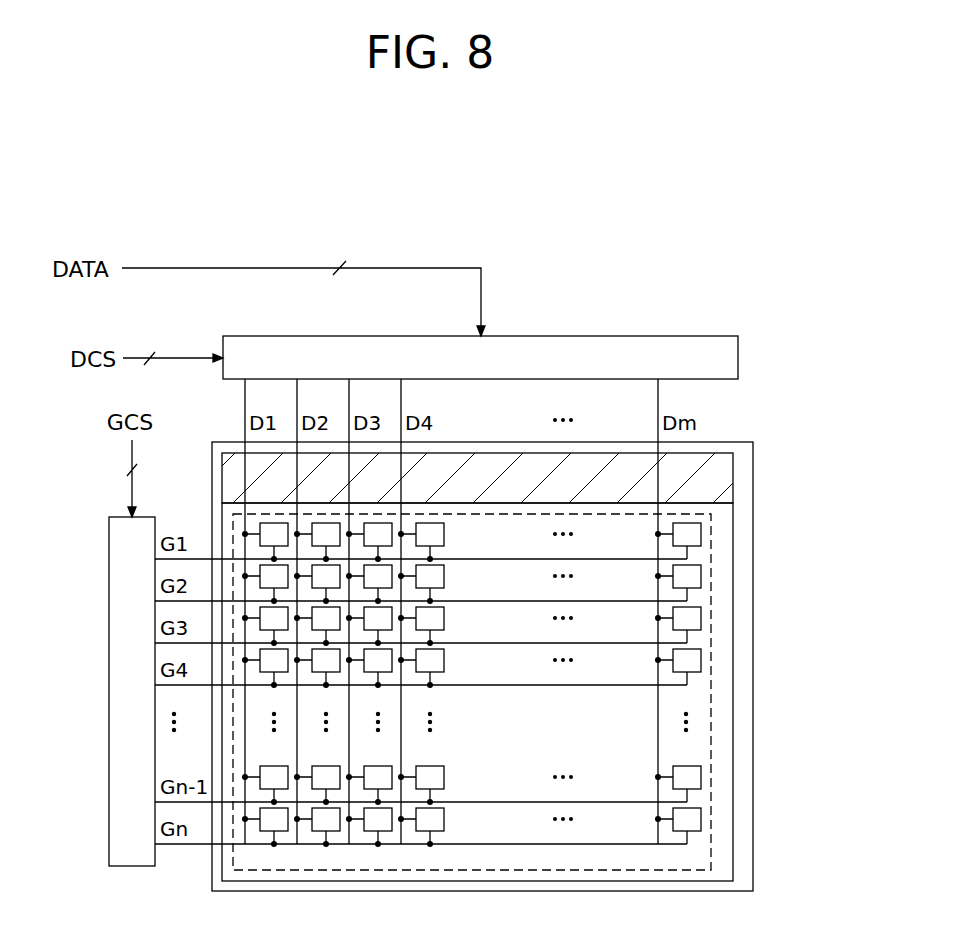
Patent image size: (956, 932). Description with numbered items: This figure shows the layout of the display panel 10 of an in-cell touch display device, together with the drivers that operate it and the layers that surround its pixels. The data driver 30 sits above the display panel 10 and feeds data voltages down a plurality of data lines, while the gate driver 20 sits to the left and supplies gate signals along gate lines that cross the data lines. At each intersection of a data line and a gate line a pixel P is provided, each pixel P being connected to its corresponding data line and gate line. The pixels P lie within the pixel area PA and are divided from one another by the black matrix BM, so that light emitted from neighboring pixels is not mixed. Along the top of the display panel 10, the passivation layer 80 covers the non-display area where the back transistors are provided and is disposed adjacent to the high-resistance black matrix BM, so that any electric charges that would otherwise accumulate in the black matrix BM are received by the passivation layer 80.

The display panel 10 is at (734, 442).
The gate driver 20 is at (109, 692).
The data driver 30 is at (683, 336).
The passivation layer 80 is at (715, 470).
The black matrix BM is at (722, 575).
The pixel area PA is at (712, 698).
The pixel P is at (700, 775).